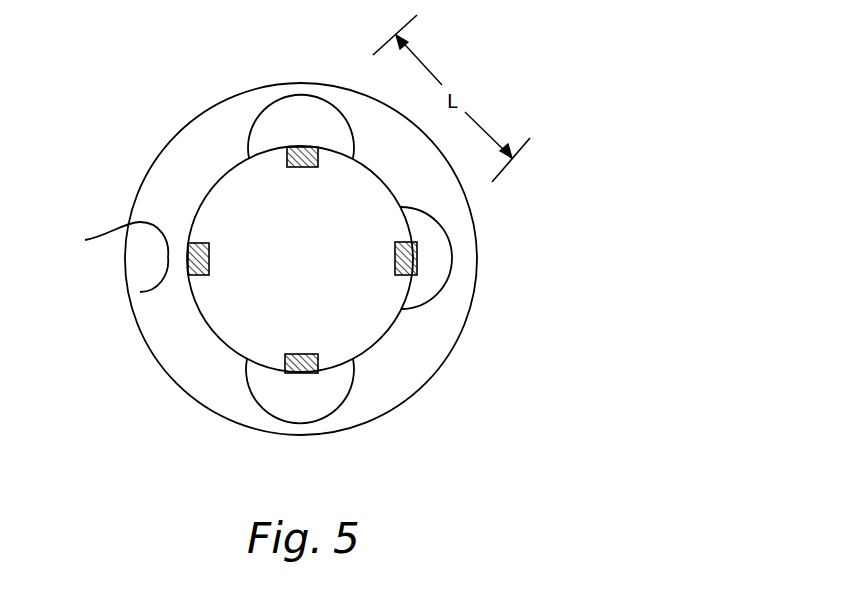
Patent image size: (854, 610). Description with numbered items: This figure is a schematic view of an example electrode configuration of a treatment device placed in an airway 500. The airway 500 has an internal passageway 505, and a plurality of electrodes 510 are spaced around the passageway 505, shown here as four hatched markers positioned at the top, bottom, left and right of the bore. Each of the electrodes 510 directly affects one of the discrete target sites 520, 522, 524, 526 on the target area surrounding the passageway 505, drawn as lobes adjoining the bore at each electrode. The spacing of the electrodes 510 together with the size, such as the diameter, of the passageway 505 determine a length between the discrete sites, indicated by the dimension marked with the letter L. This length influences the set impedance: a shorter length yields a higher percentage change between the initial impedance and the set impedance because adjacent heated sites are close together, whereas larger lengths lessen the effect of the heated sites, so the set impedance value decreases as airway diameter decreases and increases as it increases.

The airway 500 is at (155, 390).
The internal passageway 505 is at (372, 322).
The electrodes 510 is at (290, 147).
The discrete target site 520 is at (445, 262).
The discrete target site 522 is at (299, 117).
The discrete target site 524 is at (105, 257).
The discrete target site 526 is at (300, 403).